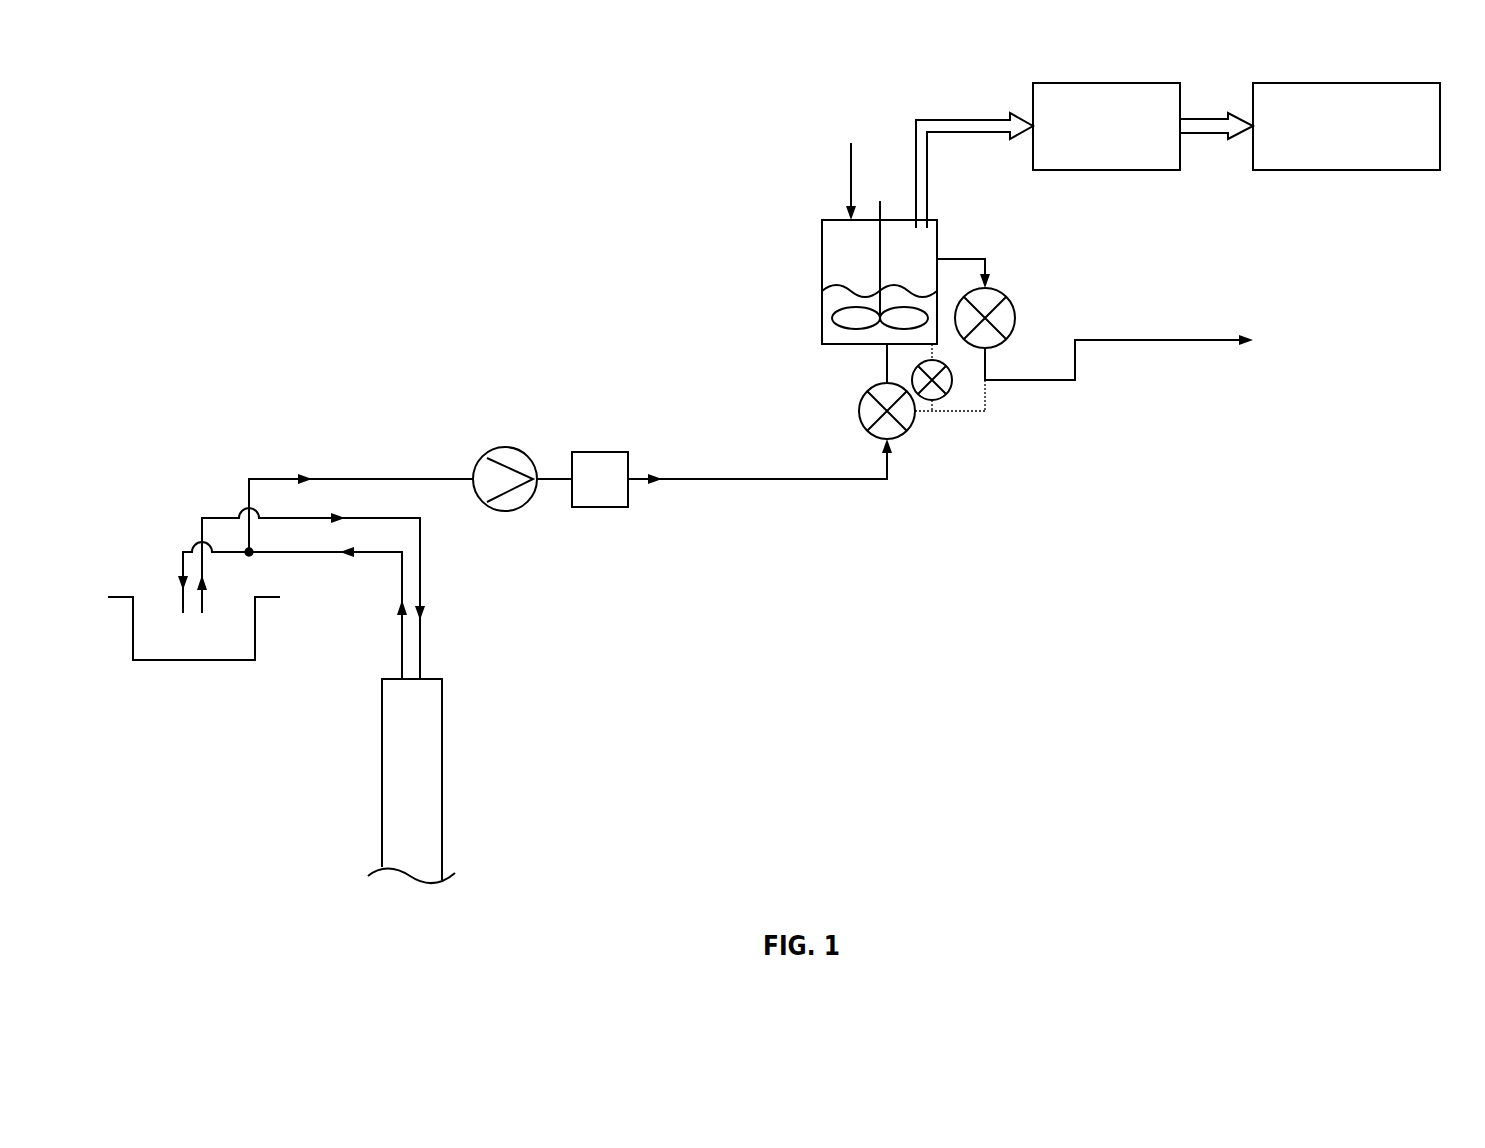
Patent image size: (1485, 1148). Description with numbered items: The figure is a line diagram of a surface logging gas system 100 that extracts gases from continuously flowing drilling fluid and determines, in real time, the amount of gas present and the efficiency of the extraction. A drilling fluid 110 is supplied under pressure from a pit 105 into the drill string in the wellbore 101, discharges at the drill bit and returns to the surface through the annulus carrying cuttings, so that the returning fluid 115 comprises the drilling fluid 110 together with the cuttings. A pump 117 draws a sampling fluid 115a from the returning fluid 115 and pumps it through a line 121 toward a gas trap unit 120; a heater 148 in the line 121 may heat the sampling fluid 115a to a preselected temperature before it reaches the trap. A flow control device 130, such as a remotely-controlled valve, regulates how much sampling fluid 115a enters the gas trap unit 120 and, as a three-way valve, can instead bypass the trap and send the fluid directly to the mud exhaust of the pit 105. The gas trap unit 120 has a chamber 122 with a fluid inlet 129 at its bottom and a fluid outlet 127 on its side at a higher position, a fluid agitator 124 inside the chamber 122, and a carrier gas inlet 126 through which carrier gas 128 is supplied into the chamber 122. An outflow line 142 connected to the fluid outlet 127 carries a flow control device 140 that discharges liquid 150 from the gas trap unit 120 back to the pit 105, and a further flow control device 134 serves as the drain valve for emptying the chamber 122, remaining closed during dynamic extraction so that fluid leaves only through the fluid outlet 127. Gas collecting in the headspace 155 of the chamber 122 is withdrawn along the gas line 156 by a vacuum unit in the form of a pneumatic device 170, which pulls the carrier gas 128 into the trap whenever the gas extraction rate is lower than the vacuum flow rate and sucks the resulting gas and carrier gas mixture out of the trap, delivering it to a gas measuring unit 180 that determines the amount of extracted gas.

The gas system 100 is at (331, 130).
The wellbore 101 is at (443, 785).
The pit 105 is at (163, 660).
The drilling fluid 110 is at (222, 518).
The returning fluid 115 is at (183, 565).
The sampling fluid 115a is at (290, 478).
The pump 117 is at (508, 448).
The heater 148 is at (595, 452).
The line 121 is at (750, 478).
The gas trap unit 120 is at (820, 272).
The chamber 122 is at (820, 275).
The fluid agitator 124 is at (832, 317).
The carrier gas inlet 126 is at (849, 212).
The carrier gas 128 is at (849, 170).
The fluid outlet 127 is at (938, 245).
The fluid inlet 129 is at (885, 350).
The flow control device 130 is at (860, 417).
The flow control device 134 is at (952, 380).
The flow control device 140 is at (1008, 295).
The outflow line 142 is at (985, 258).
The liquid 150 is at (834, 296).
The gas headspace 155 is at (930, 271).
The gas outlet line 156 is at (998, 120).
The pneumatic device 170 is at (1145, 83).
The gas measuring unit 180 is at (1403, 83).